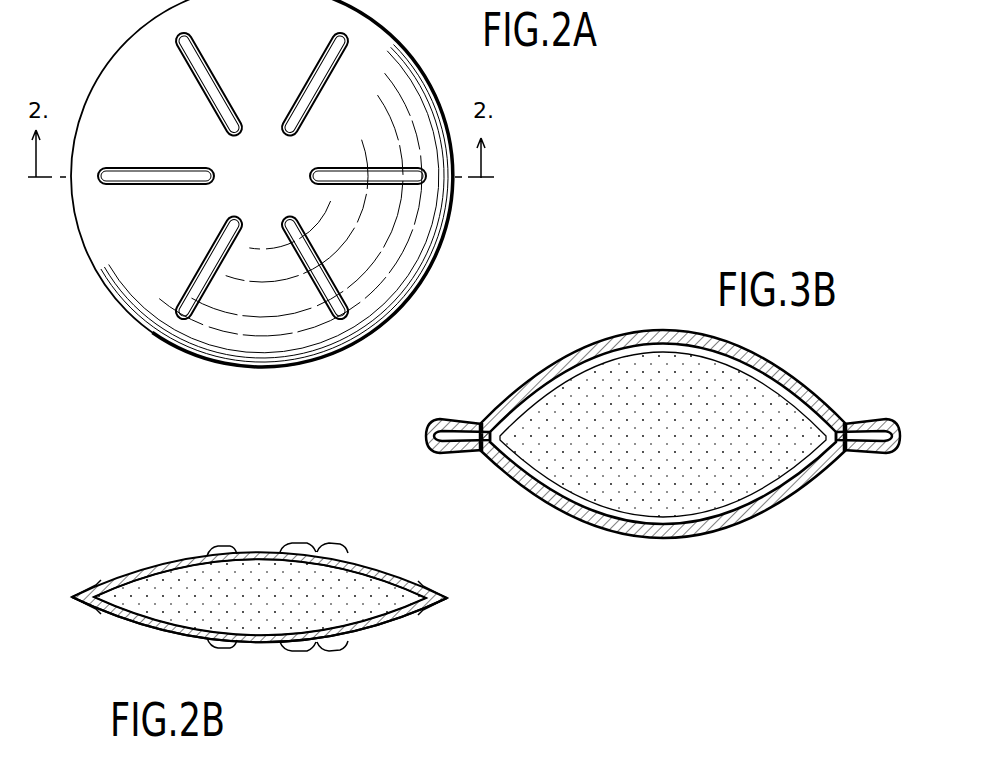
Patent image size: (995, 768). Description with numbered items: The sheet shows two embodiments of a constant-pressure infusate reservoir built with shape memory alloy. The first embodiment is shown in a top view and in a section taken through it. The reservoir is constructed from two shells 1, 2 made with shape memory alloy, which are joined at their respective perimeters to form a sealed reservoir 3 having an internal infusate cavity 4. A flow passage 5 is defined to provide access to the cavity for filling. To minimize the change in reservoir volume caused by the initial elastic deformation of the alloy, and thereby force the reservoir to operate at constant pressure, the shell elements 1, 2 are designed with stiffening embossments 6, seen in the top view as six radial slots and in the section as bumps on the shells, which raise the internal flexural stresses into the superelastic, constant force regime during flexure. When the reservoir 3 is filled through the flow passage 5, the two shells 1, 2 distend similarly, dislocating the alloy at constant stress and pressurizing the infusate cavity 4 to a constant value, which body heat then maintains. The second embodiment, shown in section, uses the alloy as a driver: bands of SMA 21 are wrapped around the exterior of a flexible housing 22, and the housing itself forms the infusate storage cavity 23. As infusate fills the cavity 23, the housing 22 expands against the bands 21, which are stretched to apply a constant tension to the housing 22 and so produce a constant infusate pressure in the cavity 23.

In FIG. 2A, the shell 1 is at (125, 263).
In FIG. 2B, the shell 1 is at (250, 553).
In FIG. 2B, the shell 2 is at (430, 618).
In FIG. 2A, the sealed reservoir 3 is at (405, 29).
In FIG. 2B, the internal infusate cavity 4 is at (180, 605).
In FIG. 2B, the flow passage 5 is at (253, 641).
In FIG. 2A, the stiffening embossments 6 is at (318, 175).
In FIG. 2B, the stiffening embossments 6 is at (157, 562).
In FIG. 3B, the bands of SMA 21 is at (580, 350).
In FIG. 3B, the flexible housing 22 is at (712, 500).
In FIG. 3B, the infusate storage cavity 23 is at (757, 448).